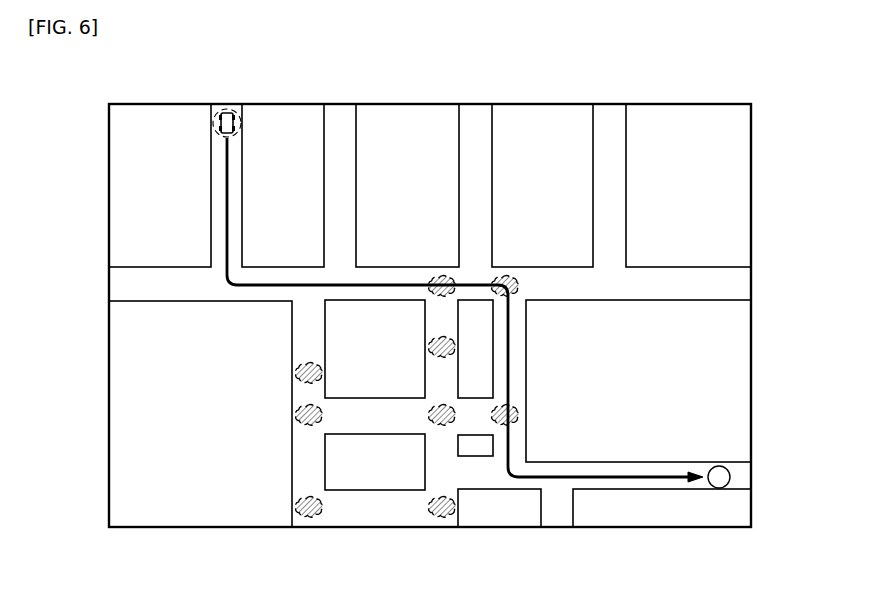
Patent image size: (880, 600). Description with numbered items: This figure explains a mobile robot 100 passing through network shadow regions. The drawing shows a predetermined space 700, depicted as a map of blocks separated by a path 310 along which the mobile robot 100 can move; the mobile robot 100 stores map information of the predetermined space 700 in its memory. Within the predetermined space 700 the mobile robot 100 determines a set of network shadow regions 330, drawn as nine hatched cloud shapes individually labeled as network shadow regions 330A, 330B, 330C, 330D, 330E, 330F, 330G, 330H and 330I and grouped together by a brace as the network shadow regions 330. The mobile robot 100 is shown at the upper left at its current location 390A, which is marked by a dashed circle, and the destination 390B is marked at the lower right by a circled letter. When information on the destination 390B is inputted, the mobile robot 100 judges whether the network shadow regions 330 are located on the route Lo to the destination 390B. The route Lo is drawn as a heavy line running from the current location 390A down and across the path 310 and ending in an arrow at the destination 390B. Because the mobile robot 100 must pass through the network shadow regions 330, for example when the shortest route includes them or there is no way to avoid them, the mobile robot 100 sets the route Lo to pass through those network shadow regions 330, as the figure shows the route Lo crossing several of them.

The mobile robot 100 is at (224, 108).
The current location 390A is at (238, 109).
The destination 390B is at (731, 477).
The route Lo is at (268, 283).
The path 310 is at (162, 288).
The network shadow regions 330 is at (572, 390).
The network shadow region 330A is at (452, 280).
The network shadow region 330B is at (517, 277).
The network shadow region 330C is at (455, 405).
The network shadow region 330D is at (518, 413).
The network shadow region 330E is at (452, 343).
The network shadow region 330F is at (325, 418).
The network shadow region 330G is at (325, 373).
The network shadow region 330H is at (325, 503).
The network shadow region 330I is at (611, 489).
The predetermined space 700 is at (432, 528).